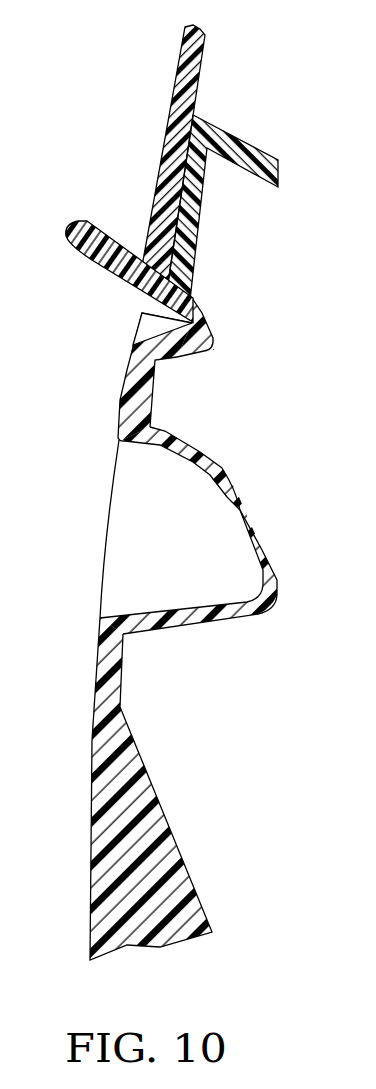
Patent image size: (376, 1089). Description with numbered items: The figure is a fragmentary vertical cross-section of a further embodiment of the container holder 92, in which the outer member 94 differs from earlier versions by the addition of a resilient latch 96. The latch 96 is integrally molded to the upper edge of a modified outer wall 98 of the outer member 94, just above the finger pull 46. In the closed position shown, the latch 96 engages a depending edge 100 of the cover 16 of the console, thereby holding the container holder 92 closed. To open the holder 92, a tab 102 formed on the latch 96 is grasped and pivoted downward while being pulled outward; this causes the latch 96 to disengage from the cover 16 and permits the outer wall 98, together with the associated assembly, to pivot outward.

The top wall 16 is at (150, 218).
The depending edge 100 is at (192, 273).
The resilient latch 96 is at (210, 303).
The tab 102 is at (85, 257).
The container holder 92 is at (184, 363).
The finger pull 46 is at (233, 497).
The outer member 94 is at (128, 766).
The outer wall 98 is at (122, 677).